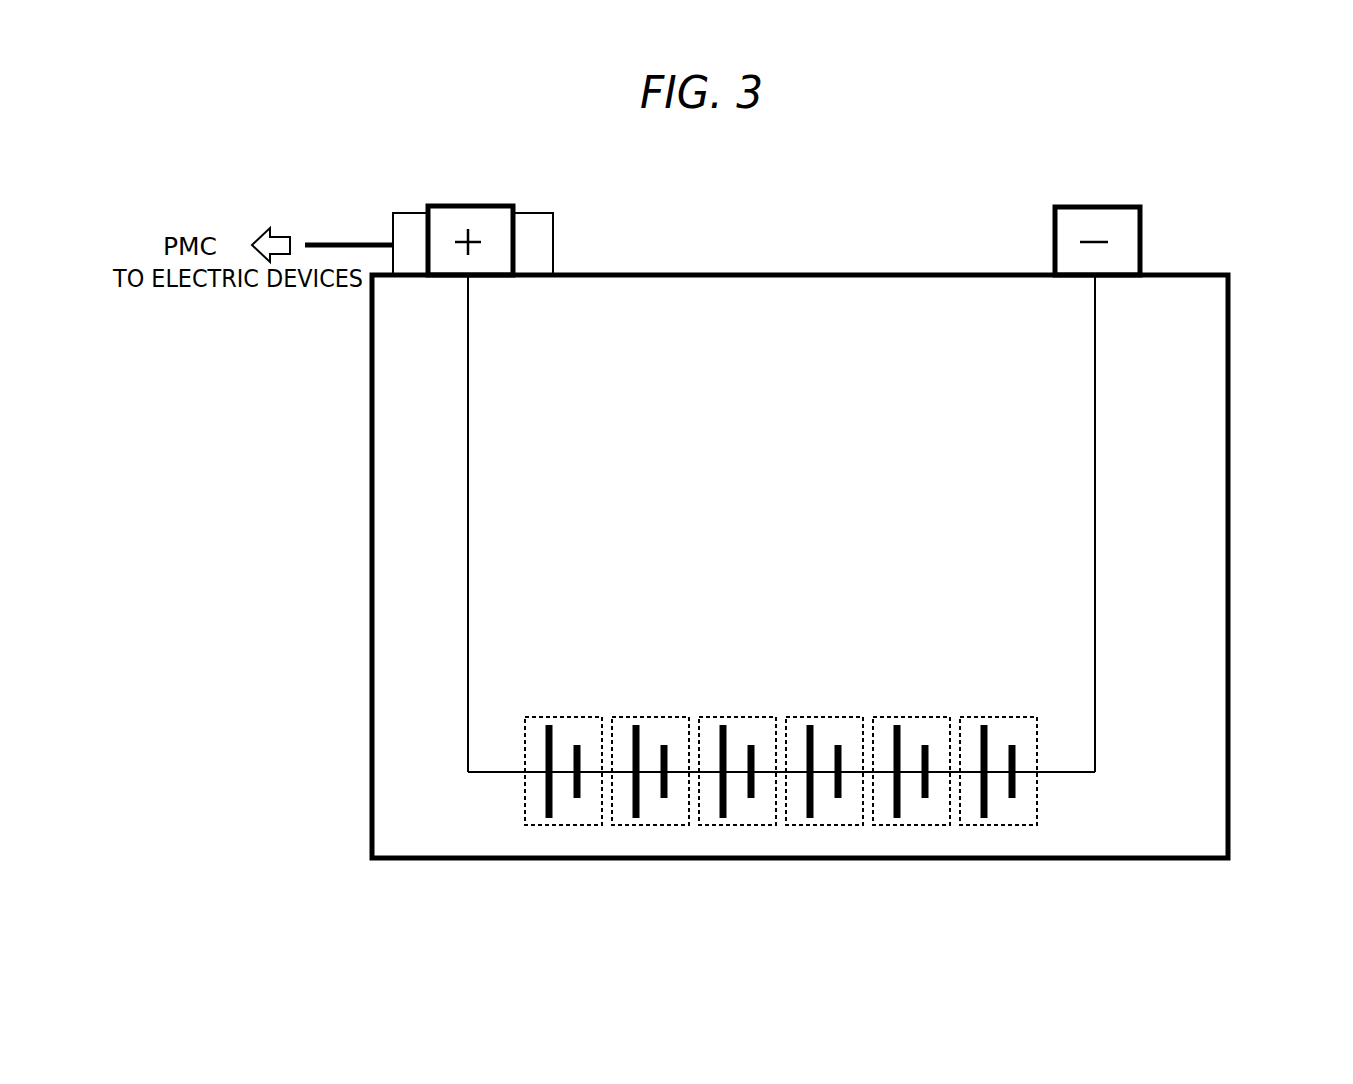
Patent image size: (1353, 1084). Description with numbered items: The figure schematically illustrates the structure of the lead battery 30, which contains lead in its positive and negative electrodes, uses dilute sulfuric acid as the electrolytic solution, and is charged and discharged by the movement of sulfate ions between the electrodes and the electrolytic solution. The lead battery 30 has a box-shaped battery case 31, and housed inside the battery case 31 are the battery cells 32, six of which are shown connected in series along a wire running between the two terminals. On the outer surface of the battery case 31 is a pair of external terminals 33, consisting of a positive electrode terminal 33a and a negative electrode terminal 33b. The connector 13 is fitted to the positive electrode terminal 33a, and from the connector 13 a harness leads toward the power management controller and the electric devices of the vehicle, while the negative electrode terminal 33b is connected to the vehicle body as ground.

The connector 13 is at (412, 230).
The lead battery 30 is at (968, 186).
The battery case 31 is at (1230, 396).
The battery cells 32 is at (565, 828).
The external terminals 33 is at (794, 209).
The positive electrode terminal 33a is at (468, 205).
The negative electrode terminal 33b is at (1095, 205).